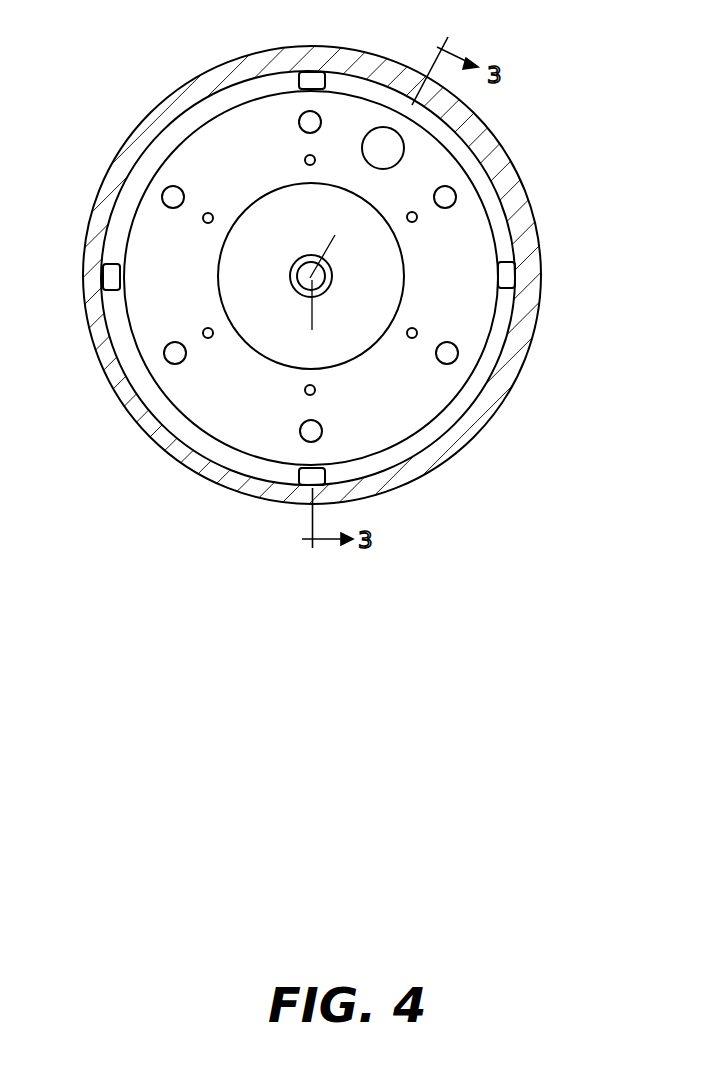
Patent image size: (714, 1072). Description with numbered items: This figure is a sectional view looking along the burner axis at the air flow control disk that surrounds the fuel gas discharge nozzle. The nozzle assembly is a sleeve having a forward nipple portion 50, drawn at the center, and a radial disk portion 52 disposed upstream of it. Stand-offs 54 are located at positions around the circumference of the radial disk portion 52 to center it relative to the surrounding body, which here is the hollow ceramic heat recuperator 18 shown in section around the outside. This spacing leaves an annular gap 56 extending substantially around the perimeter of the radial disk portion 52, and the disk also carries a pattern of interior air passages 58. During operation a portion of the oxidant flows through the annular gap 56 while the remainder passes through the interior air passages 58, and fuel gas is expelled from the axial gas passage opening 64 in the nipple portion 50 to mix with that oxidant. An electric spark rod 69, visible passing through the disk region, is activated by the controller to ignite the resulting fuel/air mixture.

The heat recuperator 18 is at (238, 57).
The forward nipple portion 50 is at (380, 305).
The radial disk portion 52 is at (470, 237).
The stand-offs 54 is at (112, 273).
The annular gap 56 is at (448, 418).
The interior air passages 58 is at (172, 192).
The axial gas passage opening 64 is at (298, 282).
The electric spark rod 69 is at (378, 137).